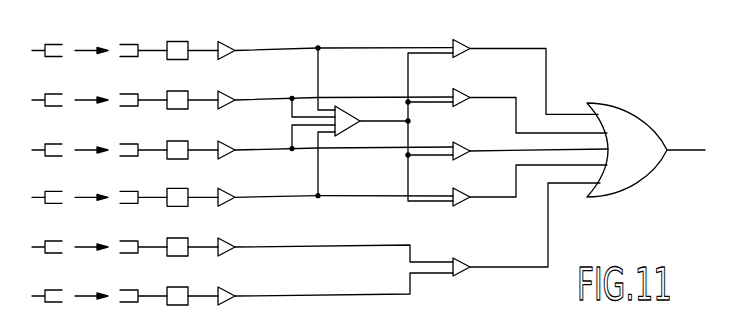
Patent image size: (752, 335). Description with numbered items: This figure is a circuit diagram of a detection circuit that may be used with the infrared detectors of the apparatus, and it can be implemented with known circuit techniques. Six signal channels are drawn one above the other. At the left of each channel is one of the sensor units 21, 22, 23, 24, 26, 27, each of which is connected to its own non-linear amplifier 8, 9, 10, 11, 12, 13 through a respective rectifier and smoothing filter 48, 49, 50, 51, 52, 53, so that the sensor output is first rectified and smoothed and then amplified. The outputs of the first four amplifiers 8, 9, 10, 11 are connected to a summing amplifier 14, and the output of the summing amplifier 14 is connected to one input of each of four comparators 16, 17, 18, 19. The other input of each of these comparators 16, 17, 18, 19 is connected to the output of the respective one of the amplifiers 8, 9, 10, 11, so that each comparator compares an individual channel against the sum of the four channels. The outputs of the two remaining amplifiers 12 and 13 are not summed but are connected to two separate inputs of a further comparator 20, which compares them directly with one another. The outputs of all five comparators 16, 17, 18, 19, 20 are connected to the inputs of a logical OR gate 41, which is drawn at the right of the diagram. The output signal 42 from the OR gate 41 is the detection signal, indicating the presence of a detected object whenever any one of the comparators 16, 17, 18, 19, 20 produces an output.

The sensor unit 21 is at (91, 37).
The sensor unit 22 is at (91, 88).
The sensor unit 23 is at (91, 138).
The sensor unit 24 is at (91, 186).
The sensor unit 26 is at (91, 236).
The sensor unit 27 is at (91, 285).
The rectifier and smoothing filter 48 is at (176, 39).
The rectifier and smoothing filter 49 is at (176, 91).
The rectifier and smoothing filter 50 is at (176, 141).
The rectifier and smoothing filter 51 is at (179, 187).
The rectifier and smoothing filter 52 is at (179, 237).
The rectifier and smoothing filter 53 is at (179, 286).
The non-linear amplifier 8 is at (230, 42).
The non-linear amplifier 9 is at (230, 93).
The non-linear amplifier 10 is at (235, 142).
The non-linear amplifier 11 is at (236, 189).
The non-linear amplifier 12 is at (236, 239).
The non-linear amplifier 13 is at (236, 288).
The summing amplifier 14 is at (349, 122).
The comparator 16 is at (471, 40).
The comparator 17 is at (471, 90).
The comparator 18 is at (471, 141).
The comparator 19 is at (469, 187).
The comparator 20 is at (469, 257).
The logical OR gate 41 is at (627, 143).
The output signal 42 is at (700, 155).